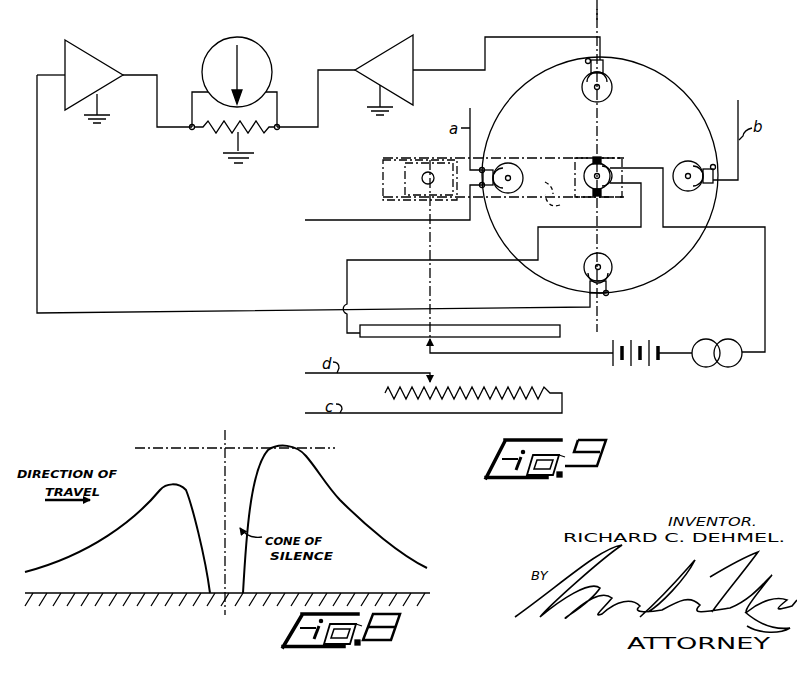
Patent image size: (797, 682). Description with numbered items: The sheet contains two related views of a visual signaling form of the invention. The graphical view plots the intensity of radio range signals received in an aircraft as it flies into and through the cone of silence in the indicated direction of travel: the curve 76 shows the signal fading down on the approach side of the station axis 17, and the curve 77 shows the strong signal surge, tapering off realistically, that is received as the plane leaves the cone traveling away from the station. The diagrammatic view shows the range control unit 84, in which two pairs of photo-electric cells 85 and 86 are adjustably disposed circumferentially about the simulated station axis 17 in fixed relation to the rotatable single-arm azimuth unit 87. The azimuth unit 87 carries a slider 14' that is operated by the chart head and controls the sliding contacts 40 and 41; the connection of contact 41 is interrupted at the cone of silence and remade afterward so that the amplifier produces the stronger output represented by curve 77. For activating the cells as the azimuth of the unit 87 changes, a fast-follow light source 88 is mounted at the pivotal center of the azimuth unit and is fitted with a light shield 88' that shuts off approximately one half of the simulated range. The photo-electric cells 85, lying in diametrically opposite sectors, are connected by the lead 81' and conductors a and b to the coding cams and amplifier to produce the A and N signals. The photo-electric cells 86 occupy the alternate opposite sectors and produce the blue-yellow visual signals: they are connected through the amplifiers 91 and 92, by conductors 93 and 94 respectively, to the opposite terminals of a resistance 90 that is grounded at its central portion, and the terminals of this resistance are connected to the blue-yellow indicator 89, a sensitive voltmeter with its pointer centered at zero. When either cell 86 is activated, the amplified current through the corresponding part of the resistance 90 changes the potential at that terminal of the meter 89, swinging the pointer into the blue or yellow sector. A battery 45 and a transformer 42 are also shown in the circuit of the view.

In FIG. 9, the amplifier 91 is at (94, 67).
In FIG. 9, the blue-yellow indicator 89 is at (259, 51).
In FIG. 9, the resistance 90 is at (252, 132).
In FIG. 9, the amplifier 92 is at (398, 46).
In FIG. 9, the conductor 94 is at (439, 70).
In FIG. 9, the station axis 17 is at (599, 15).
In FIG. 8, the station axis 17 is at (228, 492).
In FIG. 9, the range control unit 84 is at (689, 100).
In FIG. 9, the photo-electric cells 86 is at (582, 87).
In FIG. 9, the photo-electric cells 85 is at (501, 161).
In FIG. 9, the light source 88 is at (582, 176).
In FIG. 9, the light shield 88' is at (610, 163).
In FIG. 9, the azimuth unit 87 is at (552, 204).
In FIG. 9, the slider 14' is at (420, 234).
In FIG. 9, the lead 81' is at (393, 202).
In FIG. 9, the conductor 93 is at (238, 310).
In FIG. 9, the sliding contact 40 is at (437, 337).
In FIG. 9, the sliding contact 41 is at (439, 387).
In FIG. 9, the battery 45 is at (643, 367).
In FIG. 9, the transformer 42 is at (716, 366).
In FIG. 8, the curve 76 is at (165, 487).
In FIG. 8, the curve 77 is at (320, 479).